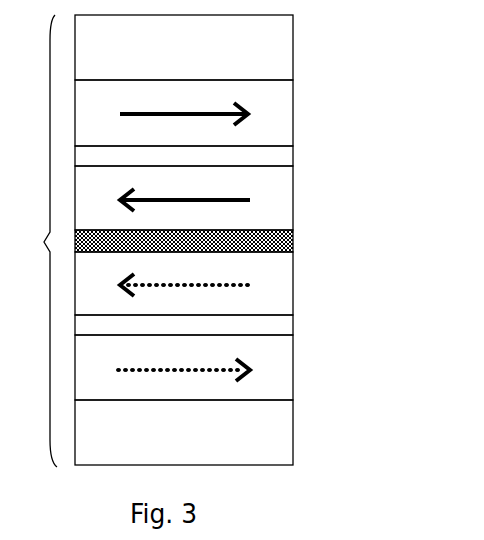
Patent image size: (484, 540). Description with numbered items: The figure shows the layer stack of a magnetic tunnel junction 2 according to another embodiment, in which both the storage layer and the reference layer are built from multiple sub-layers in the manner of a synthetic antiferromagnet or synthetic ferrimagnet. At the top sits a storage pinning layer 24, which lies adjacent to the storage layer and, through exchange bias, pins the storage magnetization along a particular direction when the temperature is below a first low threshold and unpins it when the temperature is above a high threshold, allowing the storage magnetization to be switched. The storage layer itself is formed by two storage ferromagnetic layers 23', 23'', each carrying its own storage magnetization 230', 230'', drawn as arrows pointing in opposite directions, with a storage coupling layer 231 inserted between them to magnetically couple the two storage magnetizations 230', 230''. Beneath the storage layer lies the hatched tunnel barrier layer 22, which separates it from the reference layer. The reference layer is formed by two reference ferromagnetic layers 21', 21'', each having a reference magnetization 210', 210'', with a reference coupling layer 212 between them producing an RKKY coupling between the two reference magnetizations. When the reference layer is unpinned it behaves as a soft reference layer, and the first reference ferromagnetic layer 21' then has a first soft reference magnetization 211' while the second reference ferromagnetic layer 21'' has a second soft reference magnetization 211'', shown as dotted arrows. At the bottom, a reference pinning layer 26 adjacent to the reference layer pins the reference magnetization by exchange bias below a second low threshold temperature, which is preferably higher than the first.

The magnetic tunnel junction 2 is at (39, 241).
The storage pinning layer 24 is at (283, 48).
The storage ferromagnetic layer 23' is at (224, 113).
The storage magnetization 230' is at (184, 105).
The storage coupling layer 231 is at (283, 155).
The storage ferromagnetic layer 23'' is at (228, 198).
The storage magnetization 230'' is at (185, 190).
The tunnel barrier layer 22 is at (283, 242).
The reference ferromagnetic layer 21' is at (224, 283).
The reference magnetization 210' is at (186, 275).
The first soft reference magnetization 211' is at (196, 270).
The reference coupling layer 212 is at (283, 325).
The reference ferromagnetic layer 21'' is at (228, 367).
The reference magnetization 210'' is at (166, 361).
The second soft reference magnetization 211'' is at (179, 355).
The reference pinning layer 26 is at (283, 430).